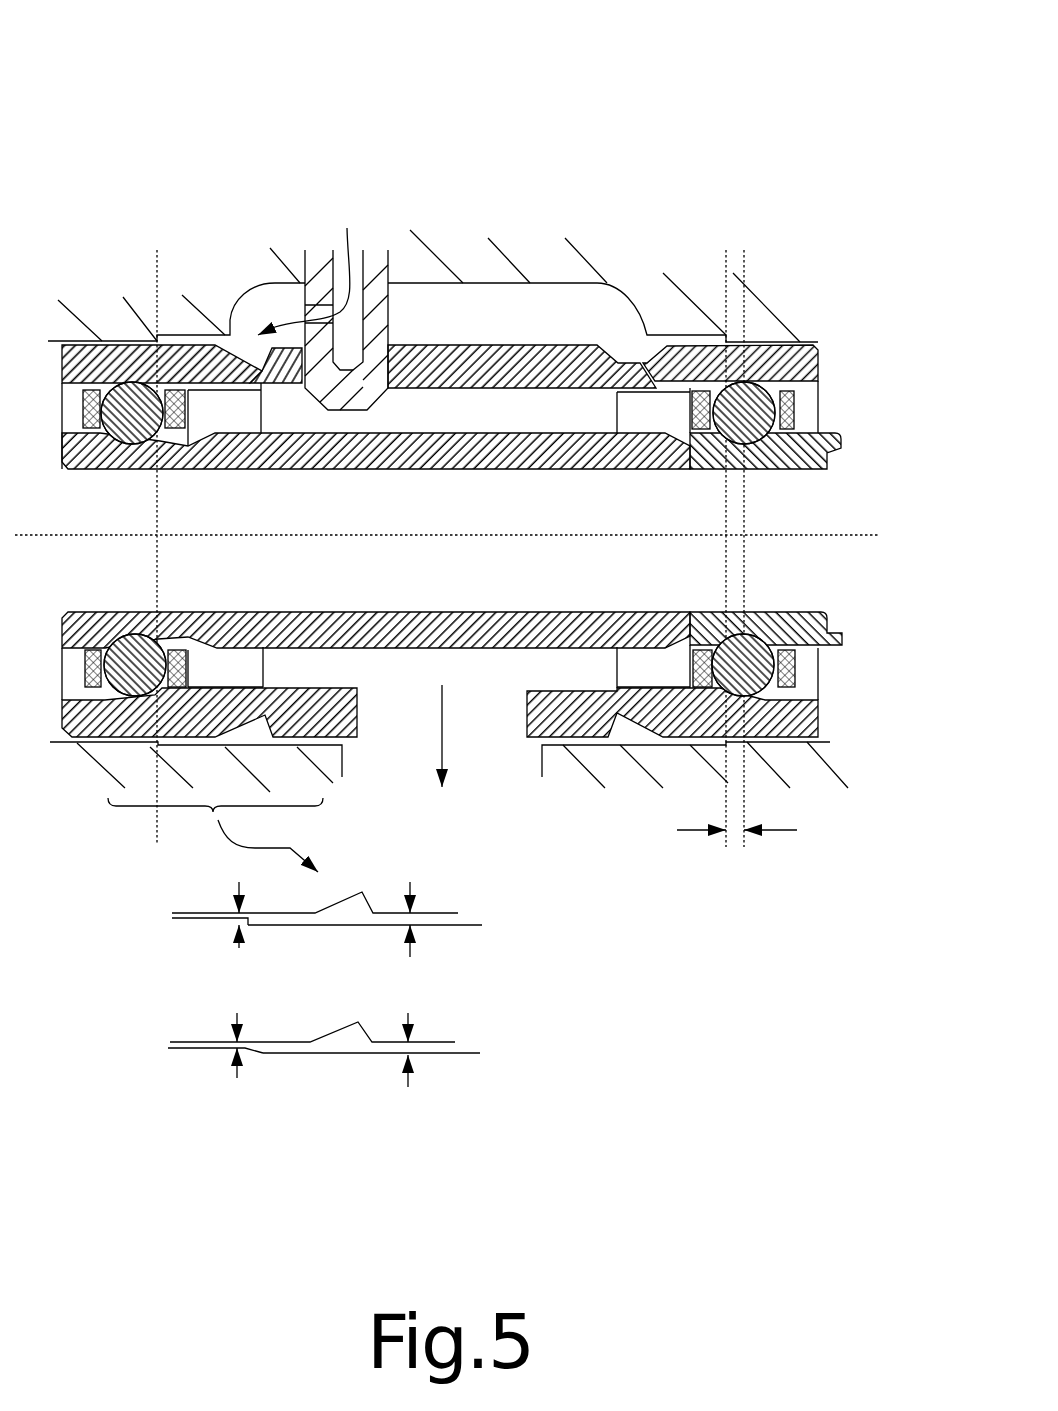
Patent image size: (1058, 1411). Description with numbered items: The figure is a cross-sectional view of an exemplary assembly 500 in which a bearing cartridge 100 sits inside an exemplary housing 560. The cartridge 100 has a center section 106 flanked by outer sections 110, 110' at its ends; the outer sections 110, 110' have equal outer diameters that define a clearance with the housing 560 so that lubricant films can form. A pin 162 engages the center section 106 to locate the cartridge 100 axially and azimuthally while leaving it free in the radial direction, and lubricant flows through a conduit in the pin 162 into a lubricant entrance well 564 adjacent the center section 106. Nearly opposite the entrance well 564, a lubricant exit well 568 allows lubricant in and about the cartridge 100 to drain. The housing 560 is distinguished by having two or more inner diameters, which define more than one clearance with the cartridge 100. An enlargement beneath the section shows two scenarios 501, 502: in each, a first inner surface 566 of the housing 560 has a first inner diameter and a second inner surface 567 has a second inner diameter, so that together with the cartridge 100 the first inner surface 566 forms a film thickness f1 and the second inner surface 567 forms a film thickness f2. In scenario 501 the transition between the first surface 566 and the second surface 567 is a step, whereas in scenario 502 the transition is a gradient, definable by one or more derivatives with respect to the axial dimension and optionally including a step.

The assembly 500 is at (152, 53).
The bearing cartridge 100 is at (833, 350).
The center section 106 is at (530, 383).
The outer section 110 is at (182, 364).
The outer section 110' is at (730, 364).
The pin 162 is at (388, 396).
The housing 560 is at (618, 253).
The lubricant entrance well 564 is at (495, 336).
The lubricant exit well 568 is at (515, 774).
The scenario 501 is at (147, 895).
The scenario 502 is at (147, 1023).
The first inner surface 566 is at (473, 925).
The second inner surface 567 is at (180, 918).
The film thickness f1 is at (426, 984).
The film thickness f2 is at (255, 984).